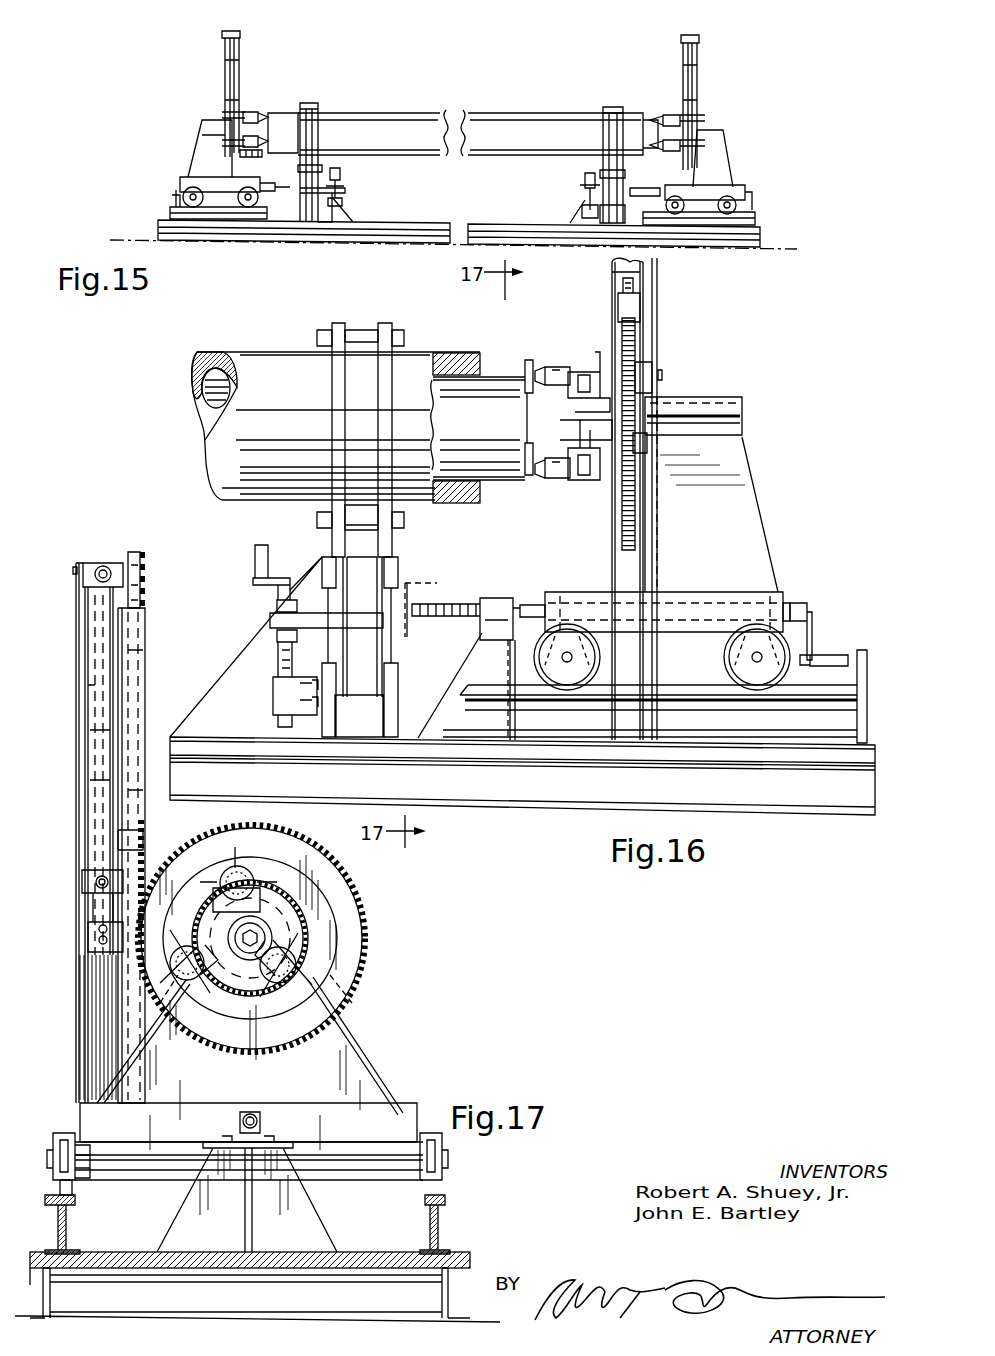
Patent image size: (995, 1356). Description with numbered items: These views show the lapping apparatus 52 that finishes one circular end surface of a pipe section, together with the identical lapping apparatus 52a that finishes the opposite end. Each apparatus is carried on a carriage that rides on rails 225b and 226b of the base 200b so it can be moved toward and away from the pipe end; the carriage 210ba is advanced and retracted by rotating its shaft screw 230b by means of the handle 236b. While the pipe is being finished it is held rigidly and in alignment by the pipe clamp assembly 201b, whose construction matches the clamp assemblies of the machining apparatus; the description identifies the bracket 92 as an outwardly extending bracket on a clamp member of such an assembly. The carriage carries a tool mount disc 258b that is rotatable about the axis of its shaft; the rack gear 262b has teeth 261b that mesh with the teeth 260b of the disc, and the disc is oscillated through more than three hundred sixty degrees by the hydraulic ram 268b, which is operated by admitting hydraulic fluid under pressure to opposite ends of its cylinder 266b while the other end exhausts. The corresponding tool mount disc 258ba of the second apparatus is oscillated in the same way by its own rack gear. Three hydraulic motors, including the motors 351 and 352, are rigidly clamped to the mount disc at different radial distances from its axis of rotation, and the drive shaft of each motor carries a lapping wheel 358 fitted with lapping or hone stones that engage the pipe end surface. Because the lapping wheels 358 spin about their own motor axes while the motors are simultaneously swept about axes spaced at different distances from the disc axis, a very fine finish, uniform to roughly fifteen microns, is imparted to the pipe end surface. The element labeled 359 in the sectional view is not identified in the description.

In FIG. 15, the lapping apparatus 52 is at (676, 101).
In FIG. 15, the lapping apparatus 52a is at (251, 89).
In FIG. 16, the bracket 92 is at (505, 366).
In FIG. 15, the base 200b is at (420, 237).
In FIG. 16, the base 200b is at (616, 793).
In FIG. 15, the pipe clamp assembly 201b is at (320, 104).
In FIG. 16, the pipe clamp assembly 201b is at (405, 333).
In FIG. 15, the carriage 210ba is at (186, 164).
In FIG. 17, the rail 225b is at (438, 1228).
In FIG. 17, the rail 226b is at (68, 1226).
In FIG. 16, the shaft screw 230b is at (686, 602).
In FIG. 16, the handle 236b is at (808, 630).
In FIG. 16, the tool mount disc 258b is at (622, 535).
In FIG. 17, the tool mount disc 258b is at (335, 898).
In FIG. 15, the tool mount disc 258ba is at (263, 161).
In FIG. 17, the teeth 260b is at (366, 941).
In FIG. 17, the teeth 261b is at (147, 582).
In FIG. 17, the rack gear 262b is at (136, 552).
In FIG. 17, the cylinder 266b is at (76, 616).
In FIG. 17, the hydraulic ram 268b is at (97, 690).
In FIG. 16, the hydraulic motor 351 is at (556, 370).
In FIG. 16, the hydraulic motor 352 is at (572, 478).
In FIG. 15, the lapping wheel 358 is at (263, 117).
In FIG. 17, the chuck jaw 359 is at (190, 1004).